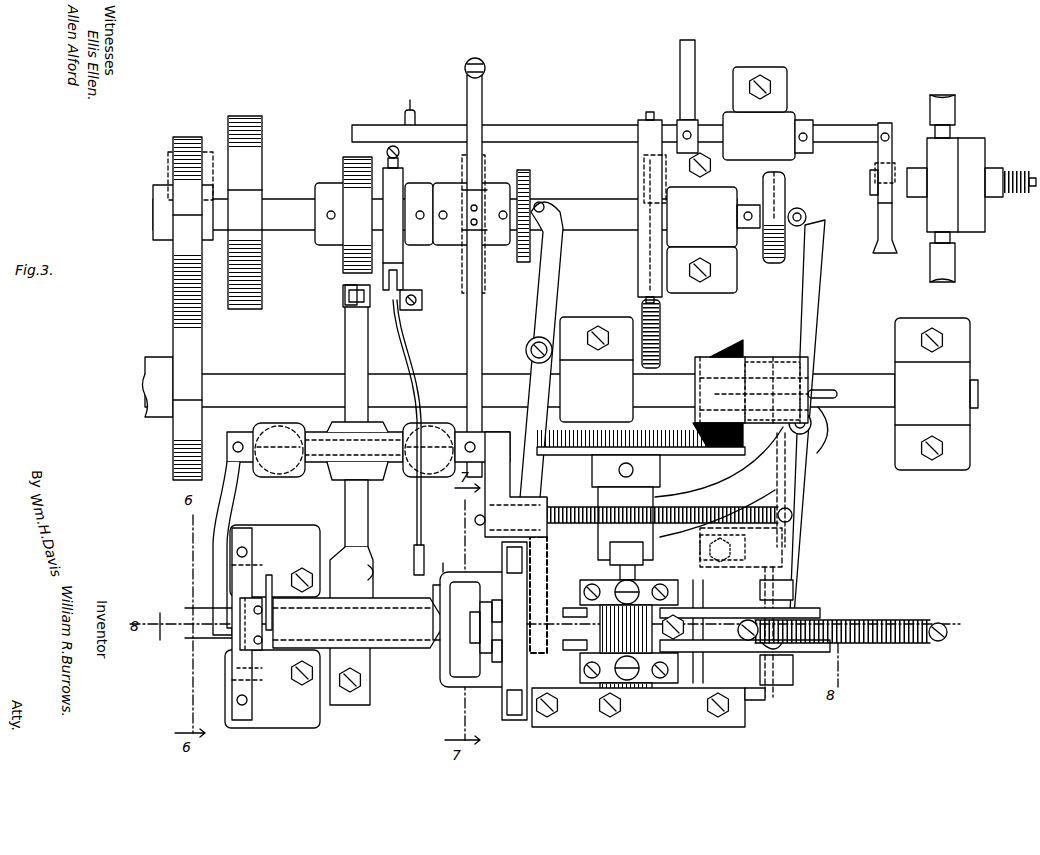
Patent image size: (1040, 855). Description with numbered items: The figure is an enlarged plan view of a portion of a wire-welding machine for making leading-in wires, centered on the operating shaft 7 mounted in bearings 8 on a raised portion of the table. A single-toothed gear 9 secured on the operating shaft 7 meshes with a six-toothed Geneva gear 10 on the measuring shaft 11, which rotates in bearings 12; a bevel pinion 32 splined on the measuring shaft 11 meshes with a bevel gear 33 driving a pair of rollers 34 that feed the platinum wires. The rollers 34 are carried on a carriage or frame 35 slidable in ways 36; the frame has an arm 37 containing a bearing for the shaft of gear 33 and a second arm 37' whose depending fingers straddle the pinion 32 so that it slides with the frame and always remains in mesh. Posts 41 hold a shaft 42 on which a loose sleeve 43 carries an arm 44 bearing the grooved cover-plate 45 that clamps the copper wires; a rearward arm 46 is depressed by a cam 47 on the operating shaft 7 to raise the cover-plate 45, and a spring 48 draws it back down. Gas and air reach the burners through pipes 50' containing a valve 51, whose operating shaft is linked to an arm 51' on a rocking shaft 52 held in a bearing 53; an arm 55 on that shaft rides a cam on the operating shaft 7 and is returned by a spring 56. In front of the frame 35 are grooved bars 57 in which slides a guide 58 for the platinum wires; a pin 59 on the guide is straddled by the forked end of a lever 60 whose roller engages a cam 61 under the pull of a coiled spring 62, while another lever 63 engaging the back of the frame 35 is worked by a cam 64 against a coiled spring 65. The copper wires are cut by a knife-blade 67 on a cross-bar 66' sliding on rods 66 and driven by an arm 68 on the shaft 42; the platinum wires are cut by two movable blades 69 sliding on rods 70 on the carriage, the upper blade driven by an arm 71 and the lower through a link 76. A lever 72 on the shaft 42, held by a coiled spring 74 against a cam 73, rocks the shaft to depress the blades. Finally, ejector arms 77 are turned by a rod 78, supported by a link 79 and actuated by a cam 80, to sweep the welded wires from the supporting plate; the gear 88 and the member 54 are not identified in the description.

The operating shaft 7 is at (445, 214).
The bearings 8 is at (158, 222).
The single-toothed gear 9 is at (187, 308).
The six-toothed gear 10 is at (197, 345).
The measuring shaft 11 is at (519, 387).
The bearings 12 is at (150, 388).
The bevel pinion 32 is at (732, 342).
The bevel gear 33 is at (641, 463).
The rollers 34 is at (686, 632).
The carriage or frame 35 is at (790, 560).
The ways 36 is at (750, 705).
The arm 37 is at (625, 533).
The second arm 37' is at (772, 371).
The posts 41 is at (381, 450).
The shaft 42 is at (230, 446).
The sleeve 43 is at (354, 451).
The arm 44 is at (351, 545).
The cover-plate 45 is at (359, 623).
The arm 46 is at (356, 358).
The cam 47 is at (357, 215).
The spring 48 is at (374, 570).
The pipes 50' is at (963, 188).
The valve 51 is at (971, 190).
The arm 51' is at (866, 188).
The shaft 52 is at (557, 131).
The bearing 53 is at (759, 113).
The rod 54 is at (640, 265).
The arm 55 is at (646, 168).
The spring 56 is at (660, 330).
The grooved bars or ways 57 is at (500, 660).
The guide 58 is at (478, 640).
The pin 59 is at (578, 629).
The lever 60 is at (535, 470).
The cam 61 is at (522, 262).
The coiled spring 62 is at (590, 510).
The lever 63 is at (815, 300).
The cam 64 is at (774, 217).
The coiled spring 65 is at (865, 645).
The rods 66 is at (272, 626).
The cross-bar 66' is at (228, 678).
The knife-blade 67 is at (240, 632).
The arm 68 is at (214, 562).
The movable blades 69 is at (480, 615).
The rods 70 is at (508, 553).
The arm 71 is at (516, 484).
The lever 72 is at (474, 276).
The cam 73 is at (462, 172).
The coiled spring 74 is at (486, 68).
The link 76 is at (470, 490).
The ejector arms 77 is at (271, 583).
The rod 78 is at (423, 520).
The link 79 is at (418, 306).
The cam 80 is at (400, 252).
The gear 88 is at (258, 292).